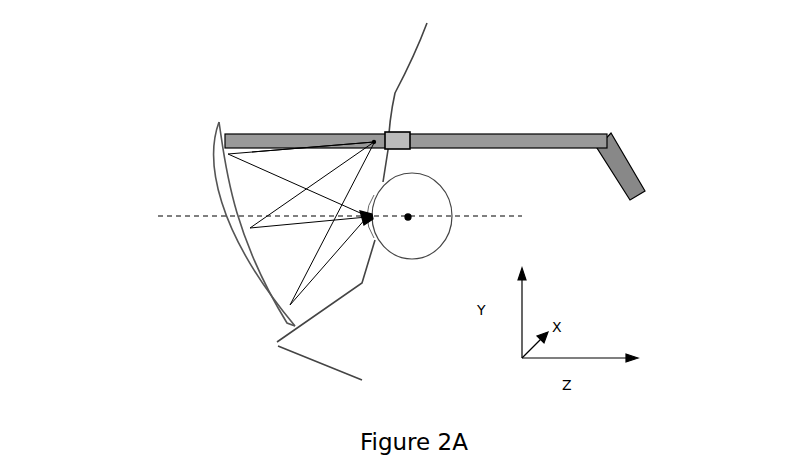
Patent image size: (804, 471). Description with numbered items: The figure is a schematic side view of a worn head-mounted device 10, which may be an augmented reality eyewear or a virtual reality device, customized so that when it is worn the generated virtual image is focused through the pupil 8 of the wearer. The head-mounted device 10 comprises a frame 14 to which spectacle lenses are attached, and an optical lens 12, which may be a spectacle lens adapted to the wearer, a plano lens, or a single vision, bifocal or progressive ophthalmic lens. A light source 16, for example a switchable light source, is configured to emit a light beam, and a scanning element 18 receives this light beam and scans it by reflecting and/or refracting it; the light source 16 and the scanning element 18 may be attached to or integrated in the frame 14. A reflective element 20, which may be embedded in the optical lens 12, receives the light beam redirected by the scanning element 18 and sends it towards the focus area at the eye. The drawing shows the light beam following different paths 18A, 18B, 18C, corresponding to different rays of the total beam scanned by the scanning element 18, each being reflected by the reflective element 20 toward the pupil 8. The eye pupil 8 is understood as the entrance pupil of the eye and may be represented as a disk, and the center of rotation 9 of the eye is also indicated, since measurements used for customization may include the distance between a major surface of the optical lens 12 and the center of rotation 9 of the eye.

The pupil 8 is at (373, 228).
The center of rotation 9 is at (410, 216).
The head-mounted device 10 is at (411, 115).
The optical lens 12 is at (196, 224).
The frame 14 is at (257, 138).
The light source 16 is at (397, 137).
The scanning element 18 is at (231, 197).
The path 18A is at (255, 152).
The path 18B is at (278, 200).
The path 18C is at (300, 282).
The reflective element 20 is at (257, 265).